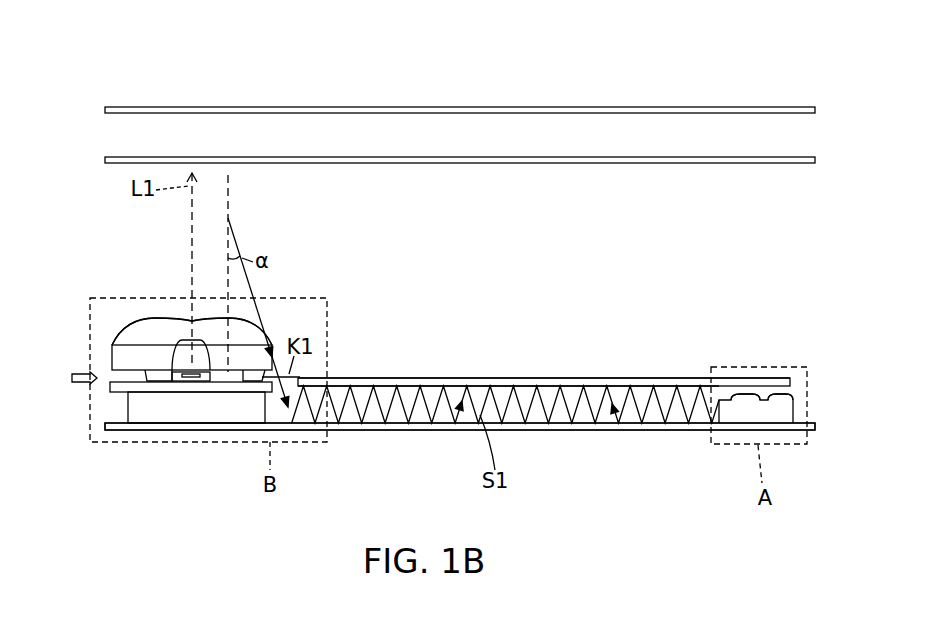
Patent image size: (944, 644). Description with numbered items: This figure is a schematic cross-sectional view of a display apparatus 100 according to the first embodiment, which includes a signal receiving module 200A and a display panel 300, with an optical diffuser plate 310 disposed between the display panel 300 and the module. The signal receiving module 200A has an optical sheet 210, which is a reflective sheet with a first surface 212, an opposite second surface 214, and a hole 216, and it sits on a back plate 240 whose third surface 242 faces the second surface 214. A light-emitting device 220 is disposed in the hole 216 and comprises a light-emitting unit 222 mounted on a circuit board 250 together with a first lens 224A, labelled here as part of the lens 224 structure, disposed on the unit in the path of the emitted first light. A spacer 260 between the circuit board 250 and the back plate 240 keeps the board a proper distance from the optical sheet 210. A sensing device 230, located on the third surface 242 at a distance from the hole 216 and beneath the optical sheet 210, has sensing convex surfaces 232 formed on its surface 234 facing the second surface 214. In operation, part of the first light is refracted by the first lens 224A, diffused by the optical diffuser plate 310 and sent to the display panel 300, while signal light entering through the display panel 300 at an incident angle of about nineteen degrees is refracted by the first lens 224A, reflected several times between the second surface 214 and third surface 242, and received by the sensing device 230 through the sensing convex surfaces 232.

The display apparatus 100 is at (798, 531).
The signal receiving module 200A is at (803, 330).
The optical sheet 210 is at (688, 383).
The first surface 212 is at (565, 374).
The second surface 214 is at (547, 392).
The hole 216 is at (98, 375).
The light-emitting device 220 is at (208, 358).
The light-emitting unit 222 is at (205, 381).
The lens 224 is at (192, 309).
The first lens 224A is at (152, 327).
The sensing device 230 is at (793, 410).
The sensing convex surface 232 is at (780, 393).
The surface 234 is at (760, 395).
The back plate 240 is at (597, 431).
The third surface 242 is at (418, 422).
The circuit board 250 is at (112, 387).
The spacer 260 is at (148, 415).
The display panel 300 is at (461, 107).
The optical diffuser plate 310 is at (460, 163).